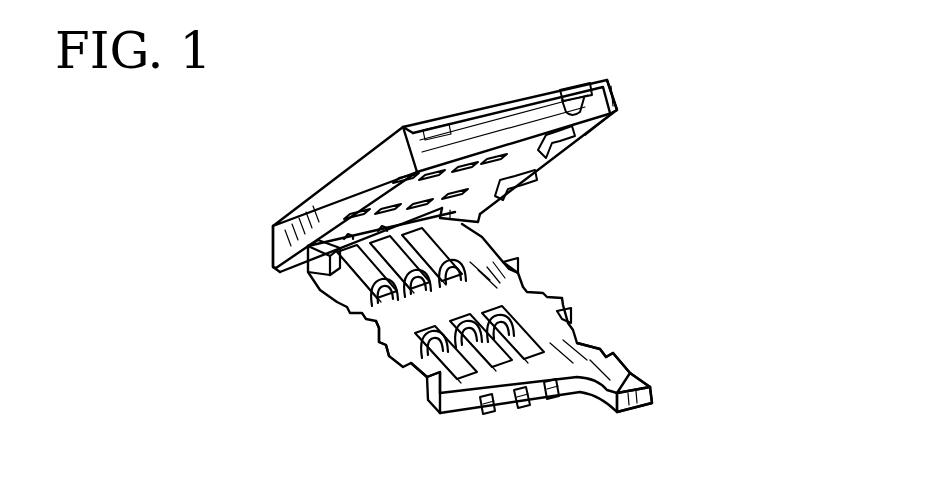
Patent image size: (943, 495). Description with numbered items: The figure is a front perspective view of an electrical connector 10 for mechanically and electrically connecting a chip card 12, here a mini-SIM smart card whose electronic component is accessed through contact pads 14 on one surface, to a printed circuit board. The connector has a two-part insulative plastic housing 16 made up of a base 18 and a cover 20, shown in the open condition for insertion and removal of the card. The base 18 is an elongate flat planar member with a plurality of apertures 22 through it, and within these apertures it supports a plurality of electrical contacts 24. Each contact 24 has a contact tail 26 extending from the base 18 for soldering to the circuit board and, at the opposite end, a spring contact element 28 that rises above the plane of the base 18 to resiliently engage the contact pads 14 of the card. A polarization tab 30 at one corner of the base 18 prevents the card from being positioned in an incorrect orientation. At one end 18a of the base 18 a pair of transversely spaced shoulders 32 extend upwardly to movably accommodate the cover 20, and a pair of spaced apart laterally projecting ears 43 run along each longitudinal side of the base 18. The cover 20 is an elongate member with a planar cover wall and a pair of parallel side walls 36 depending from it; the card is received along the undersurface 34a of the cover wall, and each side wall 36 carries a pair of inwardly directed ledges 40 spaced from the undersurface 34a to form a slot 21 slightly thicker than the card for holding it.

The electrical connector 10 is at (730, 166).
The chip card 12 is at (466, 142).
The contact pads 14 is at (420, 188).
The connector housing 16 is at (277, 270).
The base 18 is at (403, 313).
The end of base 18a is at (337, 250).
The cover 20 is at (607, 128).
The slot 21 is at (540, 177).
The apertures 22 is at (485, 325).
The electrical contacts 24 is at (432, 358).
The contact tails 26 is at (526, 405).
The spring contact elements 28 is at (455, 280).
The polarization tab 30 is at (638, 378).
The shoulders 32 is at (502, 218).
The undersurface of cover wall 34a is at (563, 108).
The side walls 36 is at (290, 240).
The ledges 40 is at (560, 146).
The ears 43 is at (563, 300).